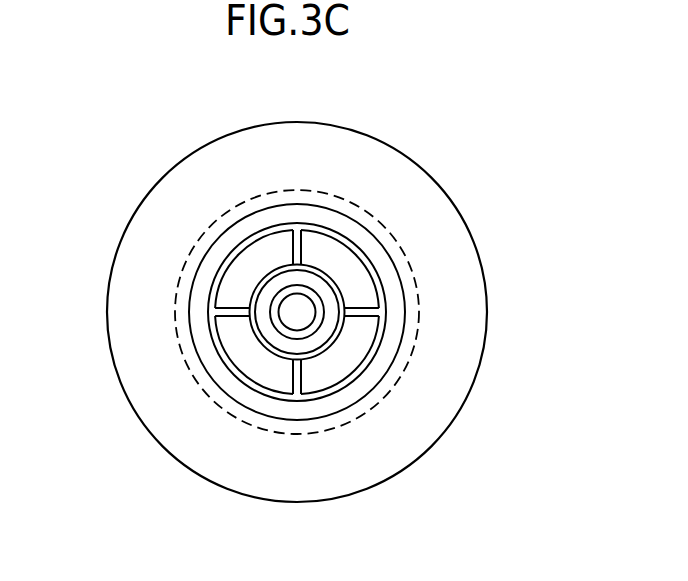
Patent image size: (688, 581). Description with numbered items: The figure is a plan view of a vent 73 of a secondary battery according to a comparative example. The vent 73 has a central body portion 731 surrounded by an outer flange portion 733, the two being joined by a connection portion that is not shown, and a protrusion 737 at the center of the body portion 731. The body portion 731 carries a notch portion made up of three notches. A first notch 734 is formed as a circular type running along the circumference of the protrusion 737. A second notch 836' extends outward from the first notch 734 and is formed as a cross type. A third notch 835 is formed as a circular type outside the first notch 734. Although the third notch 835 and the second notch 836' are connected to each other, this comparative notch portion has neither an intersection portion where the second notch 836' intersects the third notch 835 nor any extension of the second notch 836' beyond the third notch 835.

The vent 73 is at (478, 174).
The flange portion 733 is at (150, 213).
The body portion 731 is at (358, 387).
The third notch 835 is at (320, 393).
The first notch 734 is at (272, 352).
The protrusion 737 is at (320, 317).
The second notch 836' is at (238, 352).